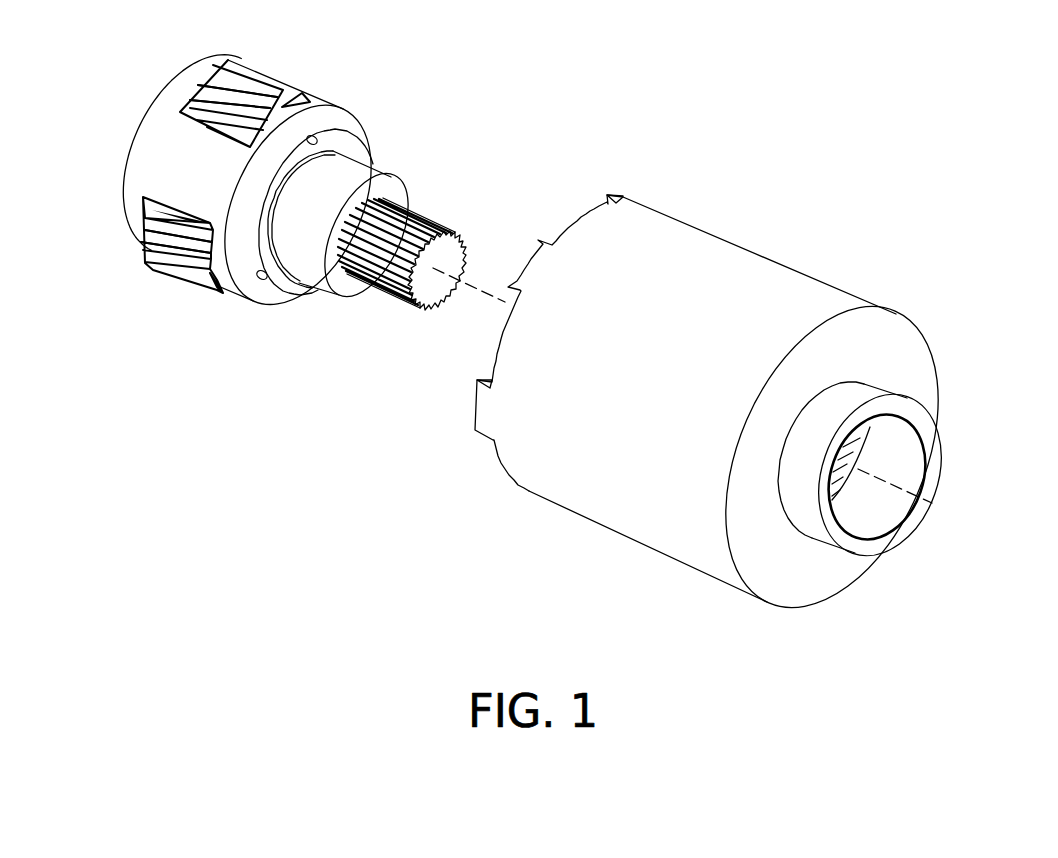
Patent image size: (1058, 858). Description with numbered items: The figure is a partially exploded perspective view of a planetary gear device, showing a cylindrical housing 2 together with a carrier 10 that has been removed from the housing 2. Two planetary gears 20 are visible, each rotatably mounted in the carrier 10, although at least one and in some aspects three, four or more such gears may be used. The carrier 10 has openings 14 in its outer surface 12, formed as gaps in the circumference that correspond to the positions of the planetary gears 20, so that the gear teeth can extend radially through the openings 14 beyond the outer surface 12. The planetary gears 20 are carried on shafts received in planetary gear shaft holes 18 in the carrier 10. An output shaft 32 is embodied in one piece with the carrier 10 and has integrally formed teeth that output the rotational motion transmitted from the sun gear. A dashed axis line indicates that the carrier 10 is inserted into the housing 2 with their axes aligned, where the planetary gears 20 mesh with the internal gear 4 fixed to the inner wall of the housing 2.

The housing 2 is at (813, 288).
The internal gear 4 is at (852, 473).
The carrier 10 is at (268, 181).
The outer surface 12 is at (147, 150).
The openings 14 is at (188, 108).
The planetary gear shaft holes 18 is at (317, 139).
The planetary gears 20 is at (252, 82).
The output shaft 32 is at (423, 213).